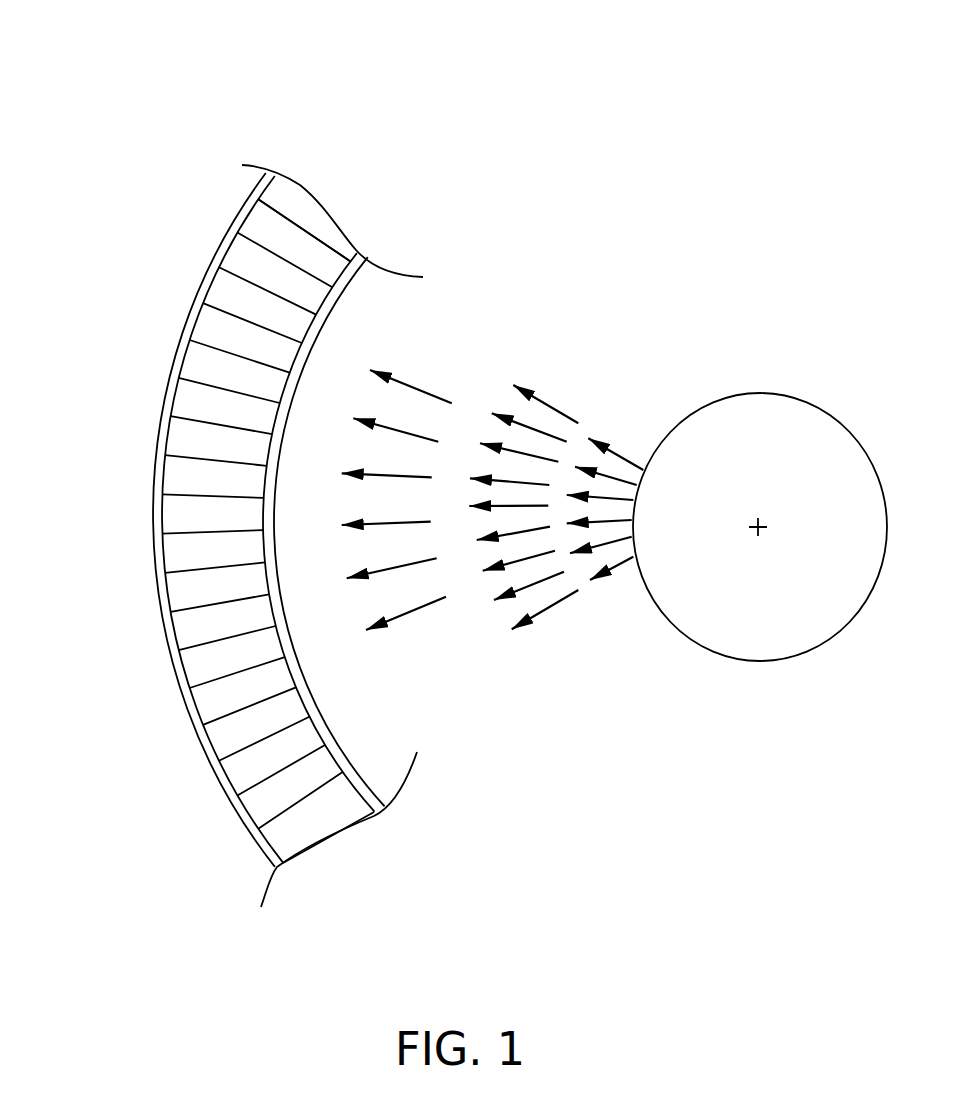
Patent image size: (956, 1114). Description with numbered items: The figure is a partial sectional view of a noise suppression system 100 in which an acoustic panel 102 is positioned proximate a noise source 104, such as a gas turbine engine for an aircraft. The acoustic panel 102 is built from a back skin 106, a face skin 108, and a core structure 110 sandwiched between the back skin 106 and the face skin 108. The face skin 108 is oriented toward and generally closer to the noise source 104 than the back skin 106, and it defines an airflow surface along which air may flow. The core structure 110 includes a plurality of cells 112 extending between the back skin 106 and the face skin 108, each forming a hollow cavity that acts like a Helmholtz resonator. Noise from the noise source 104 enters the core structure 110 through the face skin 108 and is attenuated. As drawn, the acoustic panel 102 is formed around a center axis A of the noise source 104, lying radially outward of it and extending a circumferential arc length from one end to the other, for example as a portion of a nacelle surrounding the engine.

The noise suppression system 100 is at (132, 130).
The acoustic panel 102 is at (130, 405).
The noise source 104 is at (762, 412).
The back skin 106 is at (205, 290).
The face skin 108 is at (327, 305).
The core structure 110 is at (302, 222).
The cells 112 is at (205, 667).
The center axis A is at (760, 535).